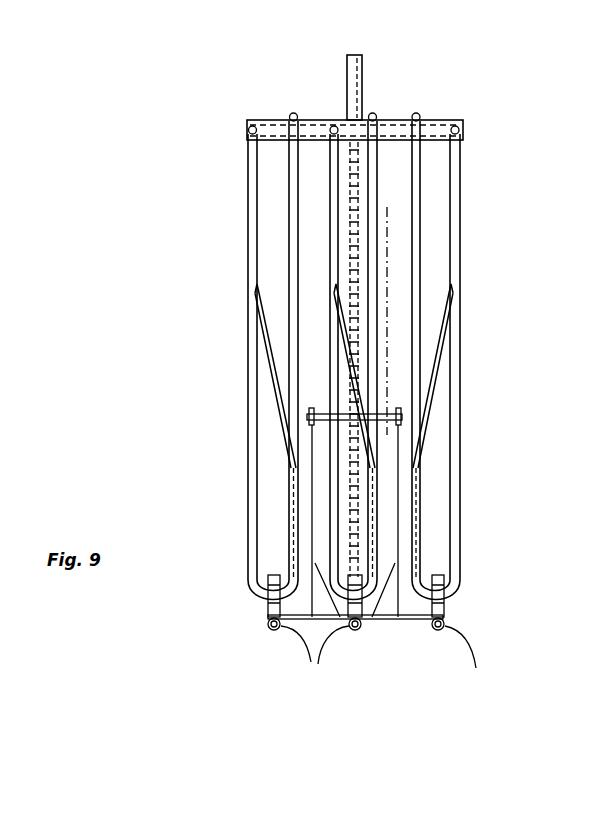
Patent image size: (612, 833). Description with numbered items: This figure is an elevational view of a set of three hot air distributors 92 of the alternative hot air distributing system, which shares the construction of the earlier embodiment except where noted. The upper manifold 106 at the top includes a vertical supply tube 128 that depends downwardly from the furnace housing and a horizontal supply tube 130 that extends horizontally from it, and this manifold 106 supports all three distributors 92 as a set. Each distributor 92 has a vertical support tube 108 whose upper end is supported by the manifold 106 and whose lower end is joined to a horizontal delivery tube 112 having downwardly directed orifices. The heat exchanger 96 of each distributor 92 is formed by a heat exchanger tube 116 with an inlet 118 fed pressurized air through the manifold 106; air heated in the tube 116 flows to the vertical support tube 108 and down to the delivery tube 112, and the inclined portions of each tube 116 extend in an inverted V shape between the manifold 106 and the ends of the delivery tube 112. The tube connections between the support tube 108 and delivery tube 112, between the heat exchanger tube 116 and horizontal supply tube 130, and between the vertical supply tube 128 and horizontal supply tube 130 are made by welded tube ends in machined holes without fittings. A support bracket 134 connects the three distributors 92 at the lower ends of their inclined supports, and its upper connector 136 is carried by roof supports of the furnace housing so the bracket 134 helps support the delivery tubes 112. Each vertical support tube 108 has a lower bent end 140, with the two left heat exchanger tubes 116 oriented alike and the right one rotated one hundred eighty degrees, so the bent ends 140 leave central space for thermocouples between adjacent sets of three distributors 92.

The hot air distributor 92 is at (275, 640).
The heat exchanger 96 is at (240, 247).
The upper manifold 106 is at (388, 95).
The vertical support tube 108 is at (268, 390).
The horizontal delivery tube 112 is at (389, 660).
The heat exchanger tube 116 is at (368, 166).
The inlet 118 is at (240, 126).
The vertical supply tube 128 is at (345, 68).
The horizontal supply tube 130 is at (403, 119).
The support bracket 134 is at (383, 621).
The upper connector 136 is at (401, 407).
The lower bent end 140 is at (363, 447).